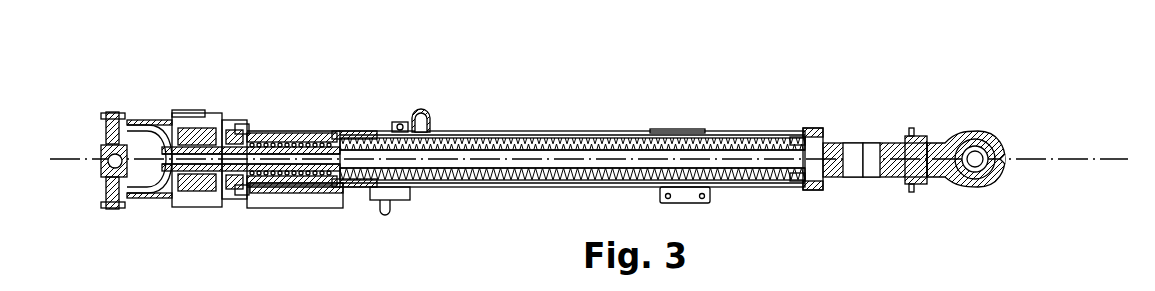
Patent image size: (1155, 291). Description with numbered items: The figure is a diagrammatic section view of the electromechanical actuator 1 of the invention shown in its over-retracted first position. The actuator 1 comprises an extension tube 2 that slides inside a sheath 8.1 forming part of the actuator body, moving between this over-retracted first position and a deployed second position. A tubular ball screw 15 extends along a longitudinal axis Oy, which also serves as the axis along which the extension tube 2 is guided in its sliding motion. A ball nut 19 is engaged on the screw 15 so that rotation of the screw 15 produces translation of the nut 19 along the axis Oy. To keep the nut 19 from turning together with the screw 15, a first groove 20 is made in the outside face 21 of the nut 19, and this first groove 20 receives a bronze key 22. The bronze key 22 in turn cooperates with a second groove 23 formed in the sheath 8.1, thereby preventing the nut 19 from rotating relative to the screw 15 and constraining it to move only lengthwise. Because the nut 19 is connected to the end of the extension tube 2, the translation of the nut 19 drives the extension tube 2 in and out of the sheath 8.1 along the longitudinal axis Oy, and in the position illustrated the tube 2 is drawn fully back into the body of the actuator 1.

The electromechanical actuator 1 is at (757, 95).
The extension tube 2 is at (885, 142).
The sheath 8.1 is at (640, 133).
The tubular ball screw 15 is at (598, 140).
The ball nut 19 is at (345, 134).
The first groove 20 is at (408, 125).
The outside face 21 is at (352, 134).
The bronze key 22 is at (424, 122).
The second groove 23 is at (526, 133).
The longitudinal axis Oy is at (1115, 158).